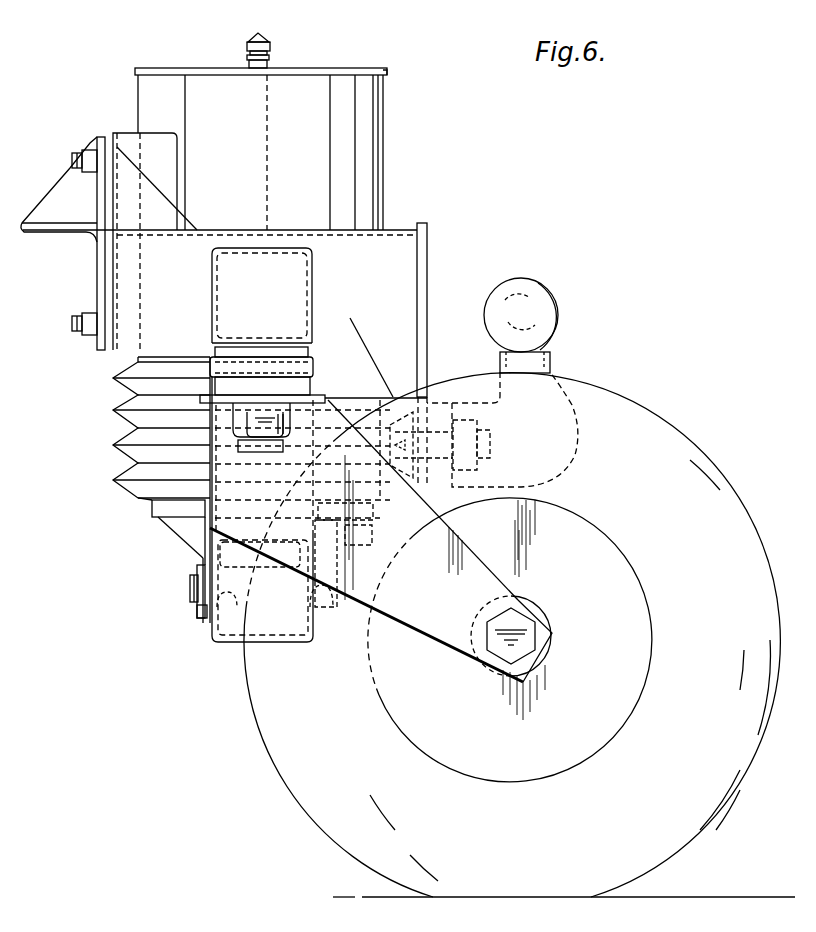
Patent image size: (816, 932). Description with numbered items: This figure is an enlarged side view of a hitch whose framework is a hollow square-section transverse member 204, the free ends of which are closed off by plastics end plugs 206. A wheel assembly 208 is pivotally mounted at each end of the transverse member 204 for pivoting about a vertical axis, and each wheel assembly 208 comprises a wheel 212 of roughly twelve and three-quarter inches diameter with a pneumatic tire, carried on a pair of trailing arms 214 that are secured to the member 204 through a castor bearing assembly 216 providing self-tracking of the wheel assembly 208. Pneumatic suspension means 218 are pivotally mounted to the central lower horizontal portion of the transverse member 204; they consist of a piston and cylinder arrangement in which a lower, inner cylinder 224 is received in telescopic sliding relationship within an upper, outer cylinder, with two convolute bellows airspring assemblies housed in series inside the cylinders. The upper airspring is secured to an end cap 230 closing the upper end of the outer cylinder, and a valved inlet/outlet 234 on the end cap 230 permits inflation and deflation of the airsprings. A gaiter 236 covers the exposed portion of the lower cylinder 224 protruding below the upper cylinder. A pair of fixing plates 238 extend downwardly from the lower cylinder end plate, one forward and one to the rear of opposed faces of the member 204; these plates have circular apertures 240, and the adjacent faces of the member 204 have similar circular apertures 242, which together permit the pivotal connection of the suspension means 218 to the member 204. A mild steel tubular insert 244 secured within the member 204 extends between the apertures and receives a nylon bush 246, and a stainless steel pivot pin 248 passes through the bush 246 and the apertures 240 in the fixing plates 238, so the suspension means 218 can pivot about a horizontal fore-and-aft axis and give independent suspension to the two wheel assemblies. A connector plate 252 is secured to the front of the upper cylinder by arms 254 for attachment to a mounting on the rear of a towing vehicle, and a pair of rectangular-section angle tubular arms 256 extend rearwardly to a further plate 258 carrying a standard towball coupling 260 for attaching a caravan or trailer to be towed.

The transverse member 204 is at (277, 248).
The end plugs 206 is at (243, 280).
The wheel assembly 208 is at (647, 388).
The wheel 212 is at (312, 783).
The trailing arms 214 is at (437, 618).
The castor bearing assembly 216 is at (227, 365).
The pneumatic suspension means 218 is at (394, 181).
The lower inner cylinder 224 is at (418, 364).
The end cap 230 is at (345, 70).
The valved inlet/outlet 234 is at (268, 45).
The gaiter 236 is at (138, 485).
The fixing plates 238 is at (205, 540).
The circular apertures 240 is at (320, 610).
The circular apertures 242 is at (300, 617).
The tubular insert 244 is at (196, 557).
The nylon bush 246 is at (196, 610).
The pivot pin 248 is at (190, 584).
The connector plate 252 is at (98, 133).
The arms 254 is at (130, 133).
The angle tubular arms 256 is at (152, 245).
The further plate 258 is at (427, 238).
The towball coupling 260 is at (537, 295).